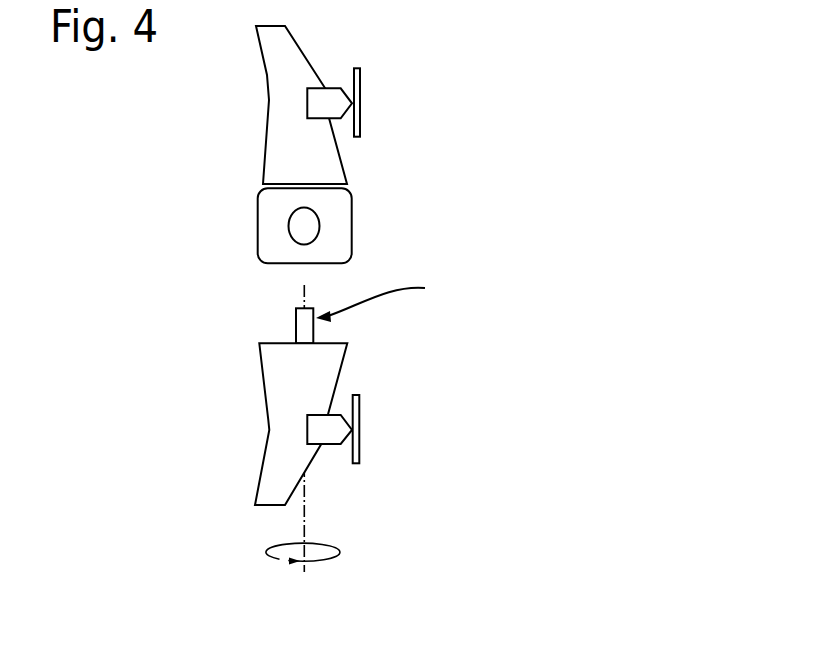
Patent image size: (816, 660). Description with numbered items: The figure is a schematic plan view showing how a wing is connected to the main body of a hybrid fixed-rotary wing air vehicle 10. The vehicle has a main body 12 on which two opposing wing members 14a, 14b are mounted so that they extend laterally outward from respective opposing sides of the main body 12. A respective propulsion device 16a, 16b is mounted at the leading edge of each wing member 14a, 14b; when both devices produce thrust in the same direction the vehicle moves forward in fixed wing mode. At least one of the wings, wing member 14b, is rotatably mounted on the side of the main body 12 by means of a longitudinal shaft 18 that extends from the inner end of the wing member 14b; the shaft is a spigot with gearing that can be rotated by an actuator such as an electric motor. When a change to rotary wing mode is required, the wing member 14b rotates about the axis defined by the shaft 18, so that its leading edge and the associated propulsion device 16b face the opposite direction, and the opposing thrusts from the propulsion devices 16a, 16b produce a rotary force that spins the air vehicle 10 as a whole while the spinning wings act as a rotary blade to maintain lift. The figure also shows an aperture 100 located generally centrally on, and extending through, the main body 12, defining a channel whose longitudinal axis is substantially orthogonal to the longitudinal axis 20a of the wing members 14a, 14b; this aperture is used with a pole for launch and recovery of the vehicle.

The air vehicle 10 is at (420, 58).
The main body 12 is at (273, 215).
The wing member 14a is at (278, 78).
The wing member 14b is at (290, 417).
The propulsion device 16a is at (360, 113).
The propulsion device 16b is at (360, 442).
The longitudinal shaft 18 is at (296, 328).
The longitudinal axis of the wing members 20a is at (307, 518).
The aperture 100 is at (318, 231).